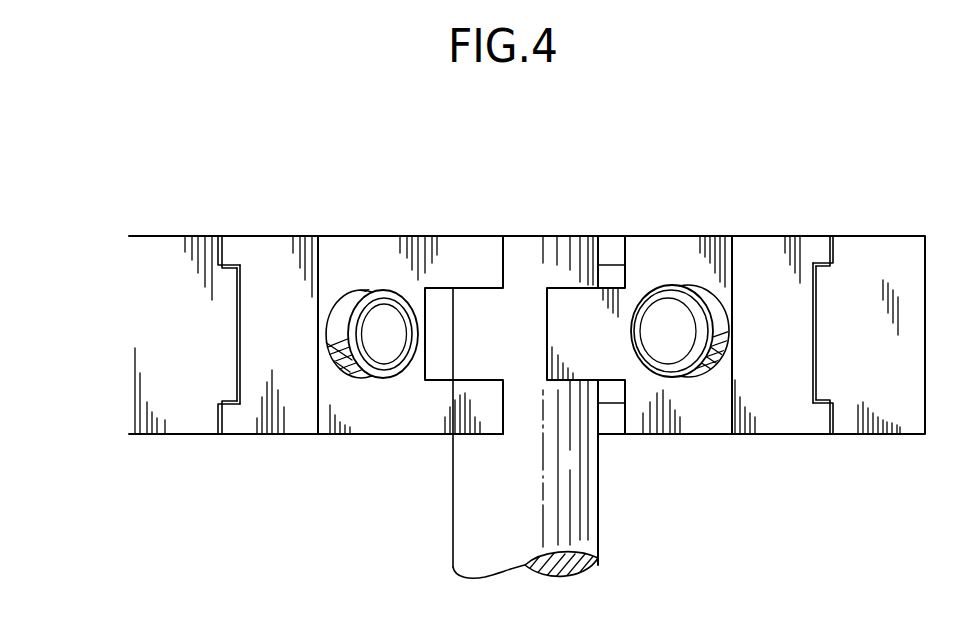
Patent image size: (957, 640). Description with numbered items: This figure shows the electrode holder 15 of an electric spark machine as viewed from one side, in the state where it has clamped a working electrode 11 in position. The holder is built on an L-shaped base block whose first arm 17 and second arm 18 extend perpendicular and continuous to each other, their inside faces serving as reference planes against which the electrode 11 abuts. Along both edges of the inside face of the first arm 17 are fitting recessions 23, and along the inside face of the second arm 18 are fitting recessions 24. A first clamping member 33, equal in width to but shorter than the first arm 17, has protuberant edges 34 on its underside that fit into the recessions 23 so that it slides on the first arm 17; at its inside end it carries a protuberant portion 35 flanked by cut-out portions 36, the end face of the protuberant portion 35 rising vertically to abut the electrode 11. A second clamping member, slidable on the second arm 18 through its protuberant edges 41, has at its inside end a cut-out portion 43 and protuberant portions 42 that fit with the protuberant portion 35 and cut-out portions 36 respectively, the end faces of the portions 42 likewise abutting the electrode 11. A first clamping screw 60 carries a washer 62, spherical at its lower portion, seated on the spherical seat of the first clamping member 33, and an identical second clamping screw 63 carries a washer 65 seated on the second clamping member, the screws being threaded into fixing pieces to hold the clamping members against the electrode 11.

The working electrode 11 is at (583, 510).
The electrode holder 15 is at (399, 228).
The first arm 17 is at (910, 257).
The second arm 18 is at (155, 330).
The fitting recession 23 is at (840, 250).
The fitting recession 24 is at (216, 251).
The first clamping member 33 is at (697, 414).
The protuberant edge 34 is at (820, 248).
The protuberant portion 35 is at (587, 315).
The cut-out portion 36 is at (619, 251).
The protuberant edge 41 is at (232, 252).
The protuberant portion 42 is at (492, 267).
The cut-out portion 43 is at (430, 334).
The first clamping screw 60 is at (673, 355).
The washer 62 is at (683, 288).
The second clamping screw 63 is at (384, 353).
The washer 65 is at (352, 290).